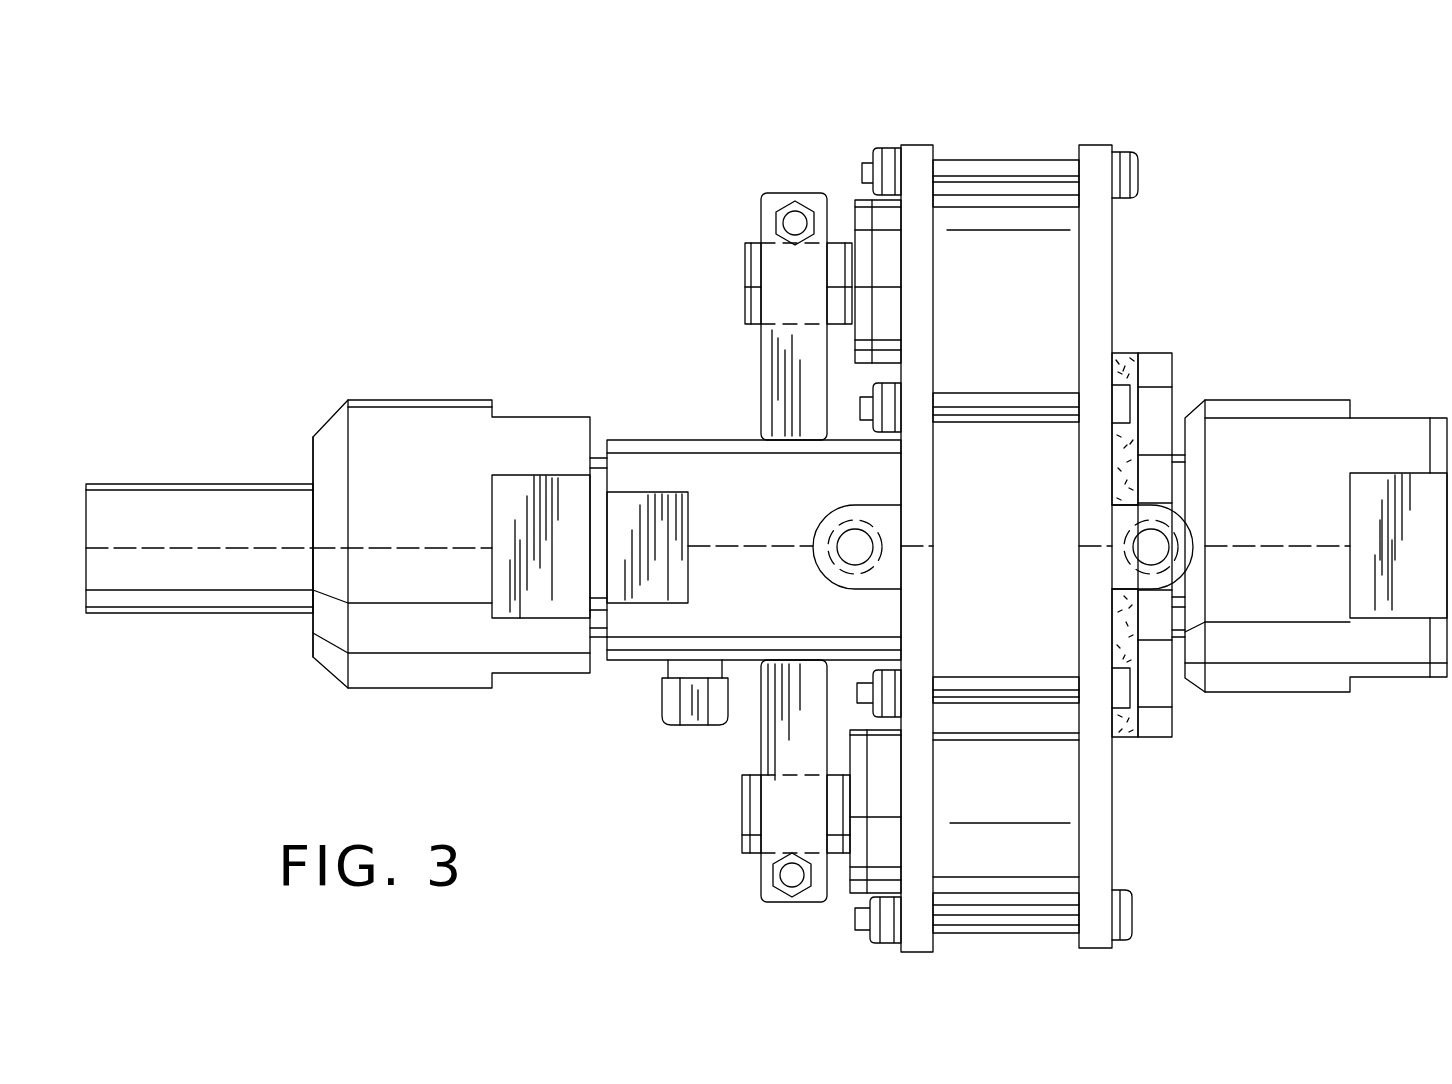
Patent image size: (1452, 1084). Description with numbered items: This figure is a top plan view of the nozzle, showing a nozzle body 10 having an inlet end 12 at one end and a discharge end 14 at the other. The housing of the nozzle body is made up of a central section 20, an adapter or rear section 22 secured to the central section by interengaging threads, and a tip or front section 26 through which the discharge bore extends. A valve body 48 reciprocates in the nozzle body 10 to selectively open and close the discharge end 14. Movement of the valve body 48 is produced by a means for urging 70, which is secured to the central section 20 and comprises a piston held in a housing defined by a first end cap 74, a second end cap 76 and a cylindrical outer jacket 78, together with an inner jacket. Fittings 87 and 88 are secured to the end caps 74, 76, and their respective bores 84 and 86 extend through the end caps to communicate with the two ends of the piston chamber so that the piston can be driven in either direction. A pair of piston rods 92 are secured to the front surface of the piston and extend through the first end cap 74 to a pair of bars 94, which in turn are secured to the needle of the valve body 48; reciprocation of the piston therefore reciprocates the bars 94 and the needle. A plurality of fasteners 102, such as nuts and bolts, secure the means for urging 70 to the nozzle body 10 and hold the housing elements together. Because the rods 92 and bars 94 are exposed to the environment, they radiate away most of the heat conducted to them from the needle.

The nozzle body 10 is at (655, 438).
The inlet end 12 is at (1393, 420).
The discharge end 14 is at (258, 483).
The central section 20 is at (630, 662).
The adapter or rear section 22 is at (1245, 400).
The tip or front section 26 is at (335, 672).
The valve body 48 is at (748, 425).
The means for urging 70 is at (1034, 528).
The first end cap 74 is at (918, 300).
The second end cap 76 is at (1095, 228).
The cylindrical outer jacket 78 is at (1040, 783).
The bore 84 is at (840, 553).
The bore 86 is at (1162, 540).
The fitting 87 is at (848, 510).
The fitting 88 is at (1192, 560).
The piston rods 92 is at (846, 245).
The bars 94 is at (778, 718).
The fasteners 102 is at (1002, 178).